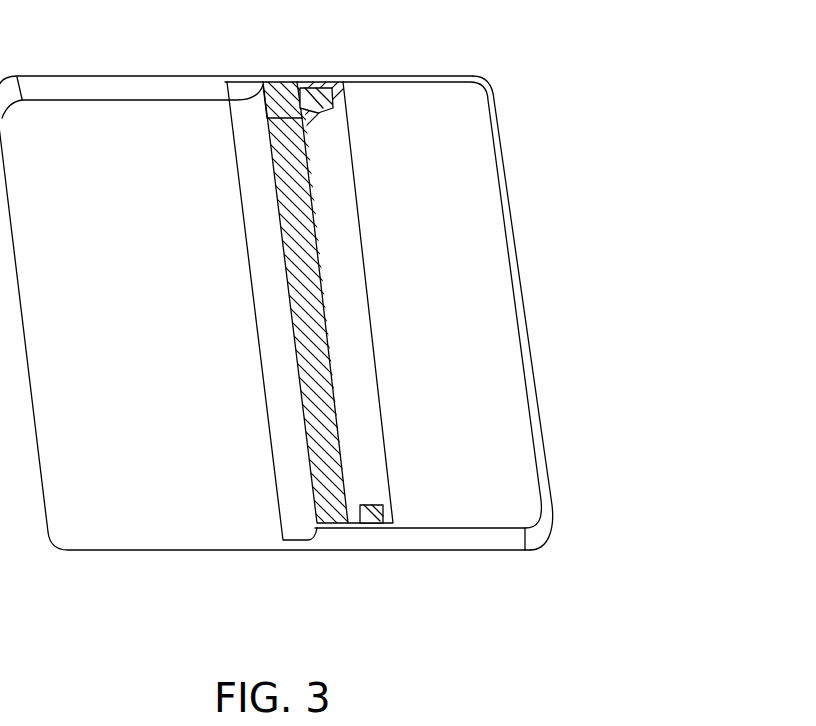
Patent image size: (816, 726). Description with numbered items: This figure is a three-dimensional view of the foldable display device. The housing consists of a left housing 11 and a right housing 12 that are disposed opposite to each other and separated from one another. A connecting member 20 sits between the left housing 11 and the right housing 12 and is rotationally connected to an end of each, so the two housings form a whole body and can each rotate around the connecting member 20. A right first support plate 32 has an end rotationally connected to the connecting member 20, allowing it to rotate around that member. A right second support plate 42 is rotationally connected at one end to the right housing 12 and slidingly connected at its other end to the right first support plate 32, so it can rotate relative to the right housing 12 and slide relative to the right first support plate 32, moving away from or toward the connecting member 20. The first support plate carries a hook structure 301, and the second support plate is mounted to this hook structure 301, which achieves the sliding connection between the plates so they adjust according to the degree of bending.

The left housing 11 is at (135, 540).
The right housing 12 is at (447, 538).
The connecting member 20 is at (305, 527).
The right first support plate 32 is at (271, 100).
The right second support plate 42 is at (352, 240).
The hook structure 301 is at (316, 108).